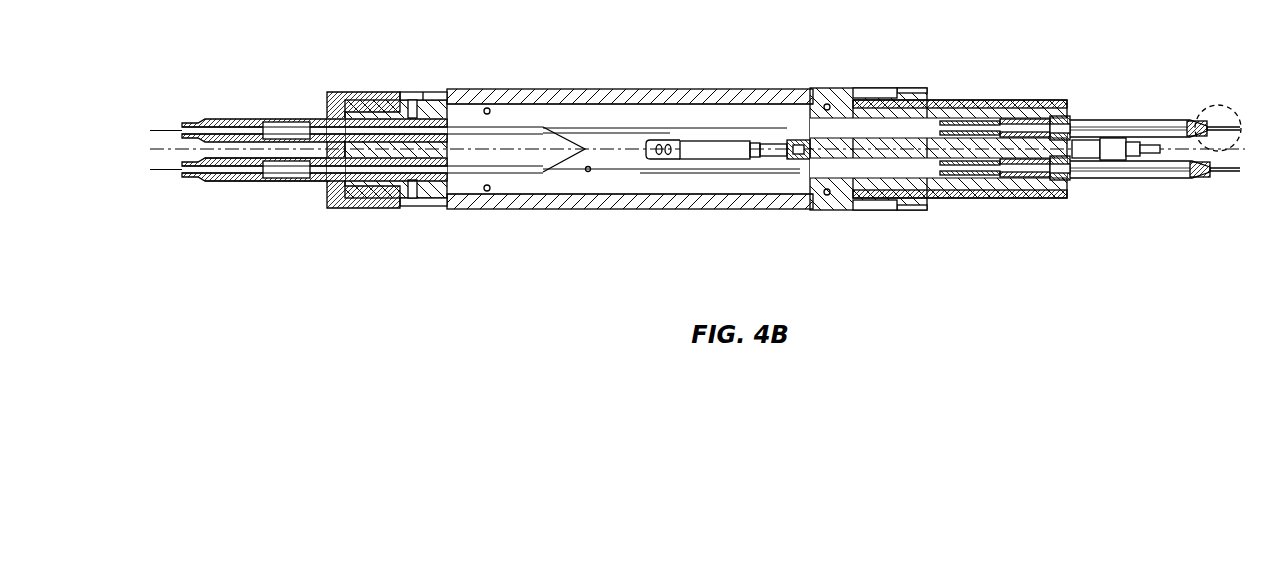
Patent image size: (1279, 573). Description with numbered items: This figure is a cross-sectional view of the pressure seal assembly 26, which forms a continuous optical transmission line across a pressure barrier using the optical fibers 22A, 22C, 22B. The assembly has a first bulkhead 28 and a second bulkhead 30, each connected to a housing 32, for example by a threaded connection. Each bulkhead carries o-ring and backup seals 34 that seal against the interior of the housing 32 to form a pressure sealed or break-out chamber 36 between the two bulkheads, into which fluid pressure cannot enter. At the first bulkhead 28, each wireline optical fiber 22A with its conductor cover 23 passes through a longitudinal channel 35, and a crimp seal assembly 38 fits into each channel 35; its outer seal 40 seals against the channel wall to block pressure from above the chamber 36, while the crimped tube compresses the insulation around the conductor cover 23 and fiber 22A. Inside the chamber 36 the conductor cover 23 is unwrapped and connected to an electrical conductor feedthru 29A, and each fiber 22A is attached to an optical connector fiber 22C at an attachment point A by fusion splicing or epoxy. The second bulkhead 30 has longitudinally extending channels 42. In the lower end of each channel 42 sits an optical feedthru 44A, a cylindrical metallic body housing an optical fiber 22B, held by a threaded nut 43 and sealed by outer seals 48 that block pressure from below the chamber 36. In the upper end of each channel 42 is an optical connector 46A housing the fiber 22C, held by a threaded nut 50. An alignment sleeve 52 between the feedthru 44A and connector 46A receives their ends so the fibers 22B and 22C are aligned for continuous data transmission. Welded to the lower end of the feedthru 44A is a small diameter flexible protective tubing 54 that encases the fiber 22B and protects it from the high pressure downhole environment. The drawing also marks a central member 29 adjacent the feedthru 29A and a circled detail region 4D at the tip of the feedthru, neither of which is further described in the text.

The optical fiber 22A is at (170, 172).
The optical fiber 22B is at (1222, 171).
The optical fiber 22C is at (653, 170).
The conductor cover 23 is at (560, 147).
The pressure seal assembly 26 is at (626, 90).
The first bulkhead 28 is at (477, 187).
The central member 29 is at (702, 162).
The electrical conductor feedthru 29A is at (1143, 143).
The second bulkhead 30 is at (975, 189).
The housing 32 is at (732, 89).
The o-ring and backup seals 34 is at (487, 191).
The longitudinal channel 35 is at (437, 178).
The pressure sealed chamber 36 is at (655, 115).
The crimp seal assembly 38 is at (230, 182).
The outer seal 40 is at (352, 122).
The longitudinally extending channel 42 is at (931, 188).
The threaded nut 43 is at (1080, 188).
The optical feedthru 44A is at (1113, 186).
The optical connector 46A is at (907, 198).
The outer seals 48 is at (1034, 188).
The threaded nut 50 is at (790, 186).
The alignment sleeve 52 is at (1008, 188).
The protective tubing 54 is at (1238, 179).
The attachment point A is at (589, 171).
The detail circle 4D is at (1218, 105).